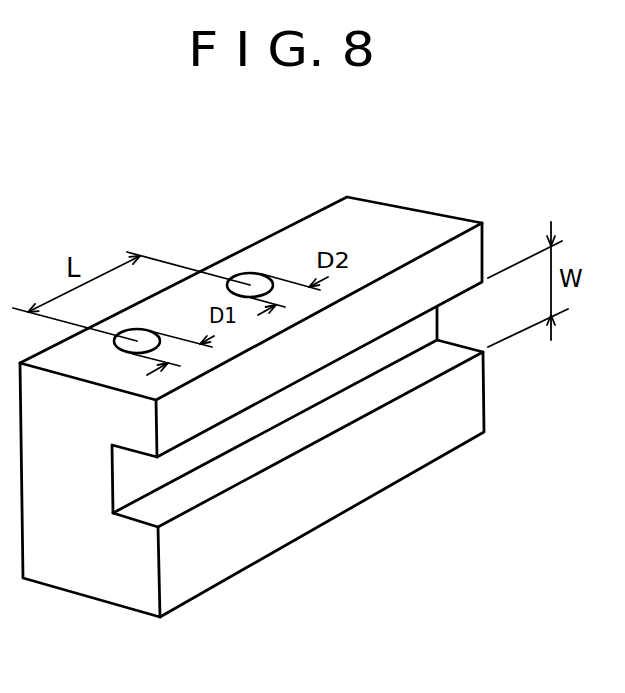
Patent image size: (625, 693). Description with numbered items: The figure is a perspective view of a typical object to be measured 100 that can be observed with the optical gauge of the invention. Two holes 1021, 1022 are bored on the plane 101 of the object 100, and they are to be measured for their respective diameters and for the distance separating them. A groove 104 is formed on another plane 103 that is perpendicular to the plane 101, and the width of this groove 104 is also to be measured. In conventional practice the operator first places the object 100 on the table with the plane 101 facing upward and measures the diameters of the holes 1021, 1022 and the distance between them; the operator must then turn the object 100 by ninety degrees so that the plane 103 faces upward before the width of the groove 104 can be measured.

The object to be measured 100 is at (305, 403).
The plane 101 is at (328, 217).
The plane 103 is at (397, 477).
The groove 104 is at (418, 373).
The hole 1021 is at (123, 353).
The hole 1022 is at (250, 277).